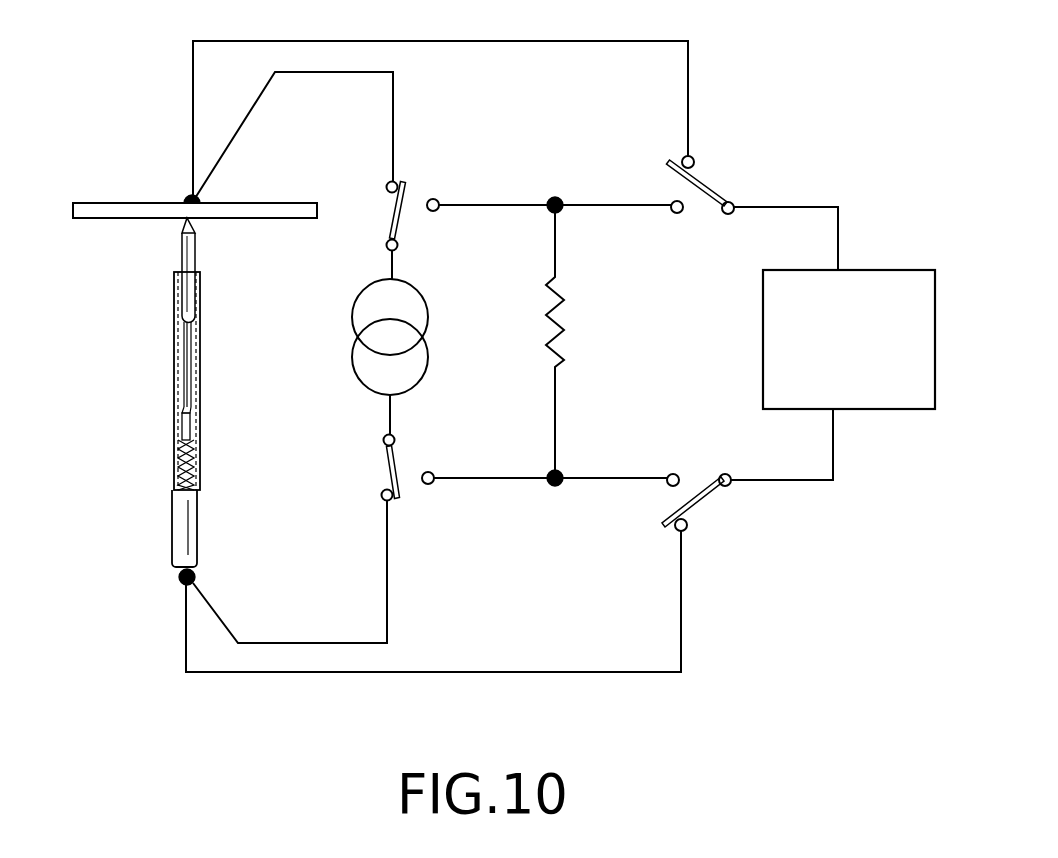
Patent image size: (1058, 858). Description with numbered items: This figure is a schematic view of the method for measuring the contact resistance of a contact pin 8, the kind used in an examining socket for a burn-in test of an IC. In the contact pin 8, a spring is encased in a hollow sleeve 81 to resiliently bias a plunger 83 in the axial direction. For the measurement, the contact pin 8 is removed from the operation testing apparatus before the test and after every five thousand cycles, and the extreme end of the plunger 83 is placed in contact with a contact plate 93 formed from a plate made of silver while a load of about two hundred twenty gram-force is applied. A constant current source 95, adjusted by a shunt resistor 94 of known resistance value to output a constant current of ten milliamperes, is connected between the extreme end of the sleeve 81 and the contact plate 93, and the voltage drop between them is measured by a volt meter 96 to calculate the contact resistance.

The contact plate 93 is at (113, 207).
The plunger 83 is at (178, 250).
The contact pin 8 is at (170, 455).
The sleeve 81 is at (195, 533).
The constant current source 95 is at (415, 292).
The shunt resistor 94 is at (552, 437).
The volt meter 96 is at (875, 409).